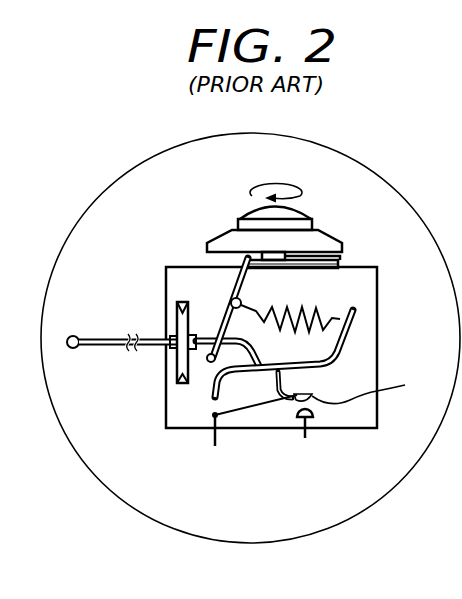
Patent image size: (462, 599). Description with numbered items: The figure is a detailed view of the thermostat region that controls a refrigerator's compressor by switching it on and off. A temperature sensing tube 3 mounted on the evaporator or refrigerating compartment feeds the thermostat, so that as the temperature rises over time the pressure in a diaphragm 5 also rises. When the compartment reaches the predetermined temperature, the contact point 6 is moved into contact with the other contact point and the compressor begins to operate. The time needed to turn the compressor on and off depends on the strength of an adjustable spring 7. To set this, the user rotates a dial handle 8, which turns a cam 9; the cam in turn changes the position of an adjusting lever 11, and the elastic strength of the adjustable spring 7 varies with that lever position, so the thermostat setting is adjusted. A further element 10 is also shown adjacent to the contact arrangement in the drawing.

The temperature sensing tube 3 is at (73, 349).
The diaphragm 5 is at (166, 372).
The contact point 6 is at (358, 404).
The adjustable spring 7 is at (331, 322).
The dial handle 8 is at (307, 220).
The cam 9 is at (337, 268).
The terminal 10 is at (209, 360).
The adjusting lever 11 is at (234, 305).